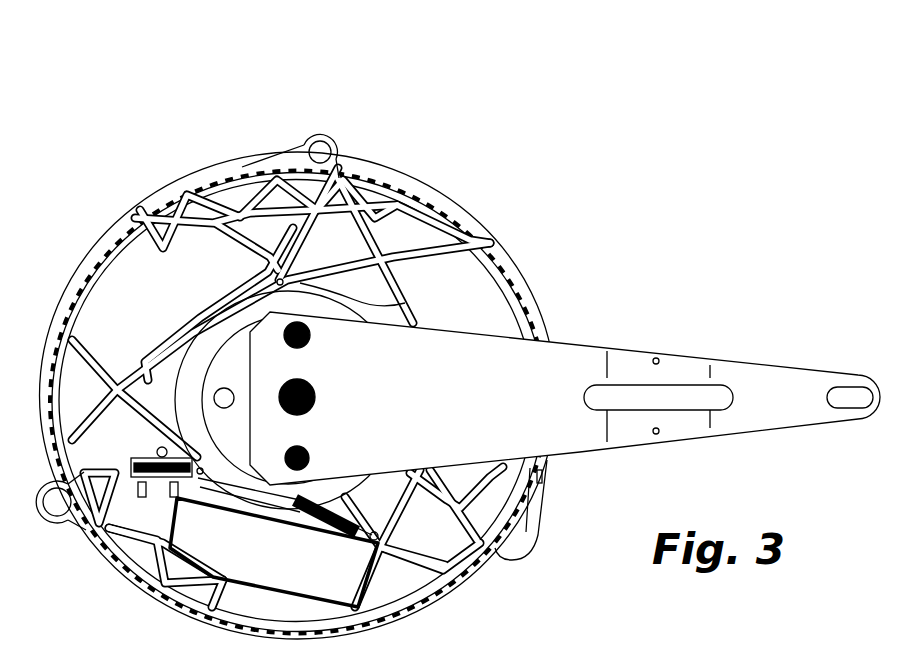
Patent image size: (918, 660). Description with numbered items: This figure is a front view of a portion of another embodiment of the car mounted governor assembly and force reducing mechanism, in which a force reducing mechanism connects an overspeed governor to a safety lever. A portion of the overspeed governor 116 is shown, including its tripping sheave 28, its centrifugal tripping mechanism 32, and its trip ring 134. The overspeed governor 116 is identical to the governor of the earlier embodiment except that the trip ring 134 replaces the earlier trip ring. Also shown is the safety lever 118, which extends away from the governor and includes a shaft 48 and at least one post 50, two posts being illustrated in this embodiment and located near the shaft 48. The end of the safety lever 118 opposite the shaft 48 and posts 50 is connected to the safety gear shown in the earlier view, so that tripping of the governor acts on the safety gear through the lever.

The overspeed governor 116 is at (92, 174).
The trip ring 134 is at (204, 326).
The tripping sheave 28 is at (394, 172).
The centrifugal tripping mechanism 32 is at (493, 253).
The safety lever 118 is at (682, 370).
The shaft 48 is at (317, 397).
The post 50 is at (312, 333).